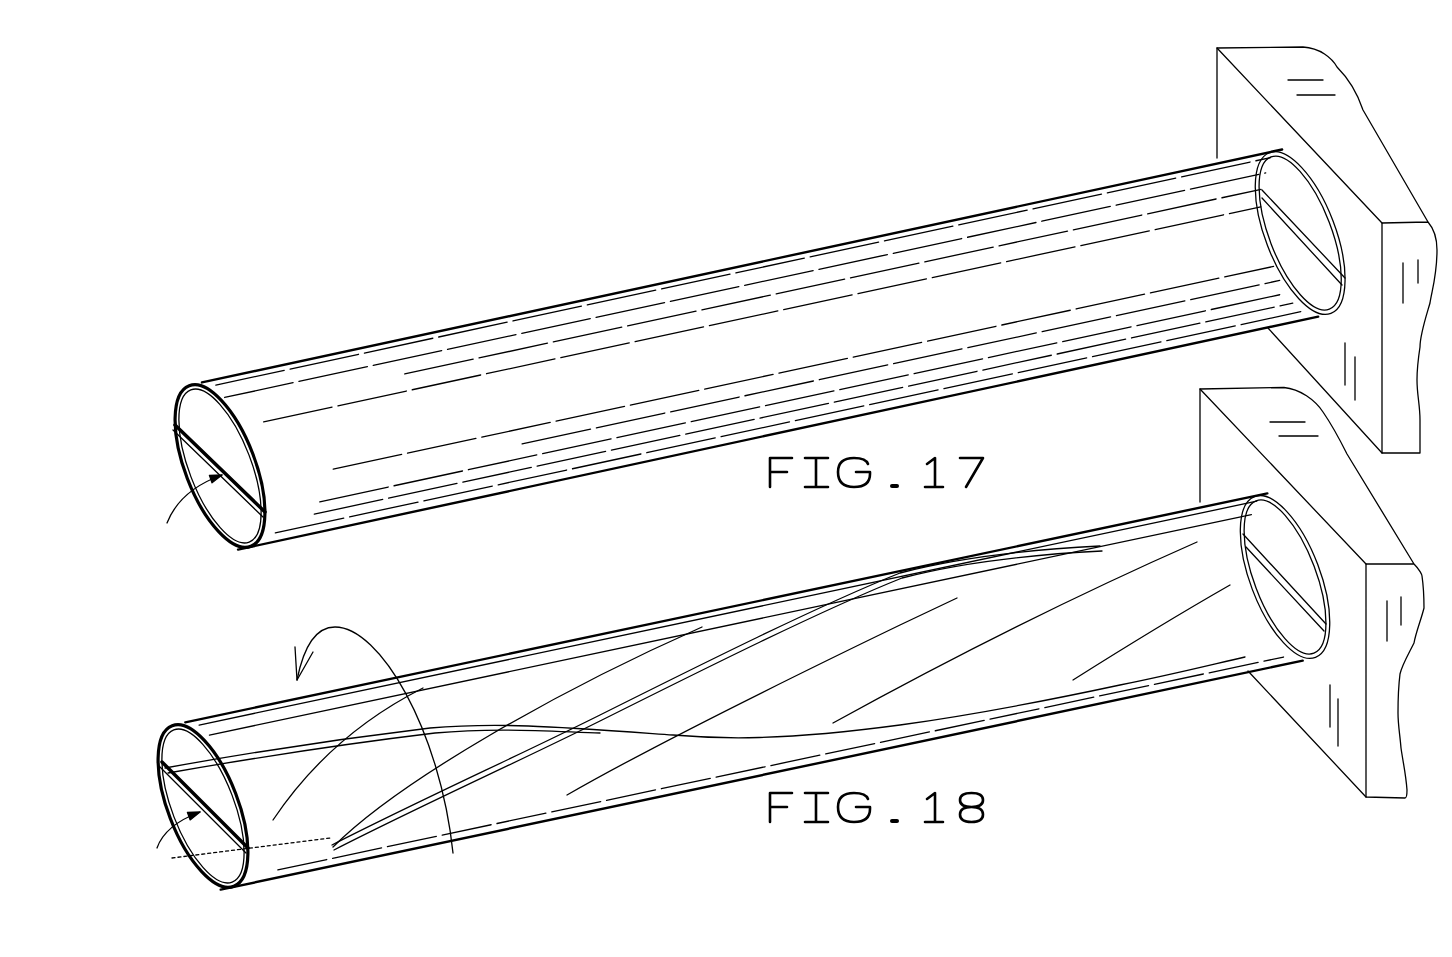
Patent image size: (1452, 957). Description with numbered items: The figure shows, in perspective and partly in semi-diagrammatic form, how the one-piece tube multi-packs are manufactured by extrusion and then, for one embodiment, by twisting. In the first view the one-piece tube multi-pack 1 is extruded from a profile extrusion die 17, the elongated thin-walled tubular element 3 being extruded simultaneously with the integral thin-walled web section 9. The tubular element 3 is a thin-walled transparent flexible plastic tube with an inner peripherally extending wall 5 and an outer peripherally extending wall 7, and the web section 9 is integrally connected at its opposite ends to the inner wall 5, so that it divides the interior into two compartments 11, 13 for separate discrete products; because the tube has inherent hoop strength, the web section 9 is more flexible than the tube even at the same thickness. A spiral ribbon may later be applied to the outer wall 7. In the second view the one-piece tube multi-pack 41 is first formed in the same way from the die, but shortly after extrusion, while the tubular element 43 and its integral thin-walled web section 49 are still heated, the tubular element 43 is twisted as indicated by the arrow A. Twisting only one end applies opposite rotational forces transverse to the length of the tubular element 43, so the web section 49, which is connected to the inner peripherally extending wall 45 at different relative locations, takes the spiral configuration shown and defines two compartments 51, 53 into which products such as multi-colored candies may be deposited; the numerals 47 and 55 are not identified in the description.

In FIG. 17, the one-piece tube multi-pack 1 is at (750, 358).
In FIG. 17, the tubular element 3 is at (602, 295).
In FIG. 17, the inner peripherally extending wall 5 is at (177, 412).
In FIG. 17, the outer peripherally extending wall 7 is at (893, 233).
In FIG. 17, the integral thin-walled web section 9 is at (190, 512).
In FIG. 17, the compartment 11 is at (175, 425).
In FIG. 17, the compartment 13 is at (210, 525).
In FIG. 17, the profile extrusion die 17 is at (1330, 130).
In FIG. 18, the one-piece tube multi-pack 41 is at (738, 683).
In FIG. 18, the tubular element 43 is at (455, 660).
In FIG. 18, the inner peripherally extending wall 45 is at (173, 745).
In FIG. 18, the helical line 47 is at (1030, 535).
In FIG. 18, the integral thin-walled web section 49 is at (168, 843).
In FIG. 18, the compartment 51 is at (163, 765).
In FIG. 18, the compartment 53 is at (192, 848).
In FIG. 18, the support block 55 is at (1330, 700).
In FIG. 18, the arrow A is at (370, 642).